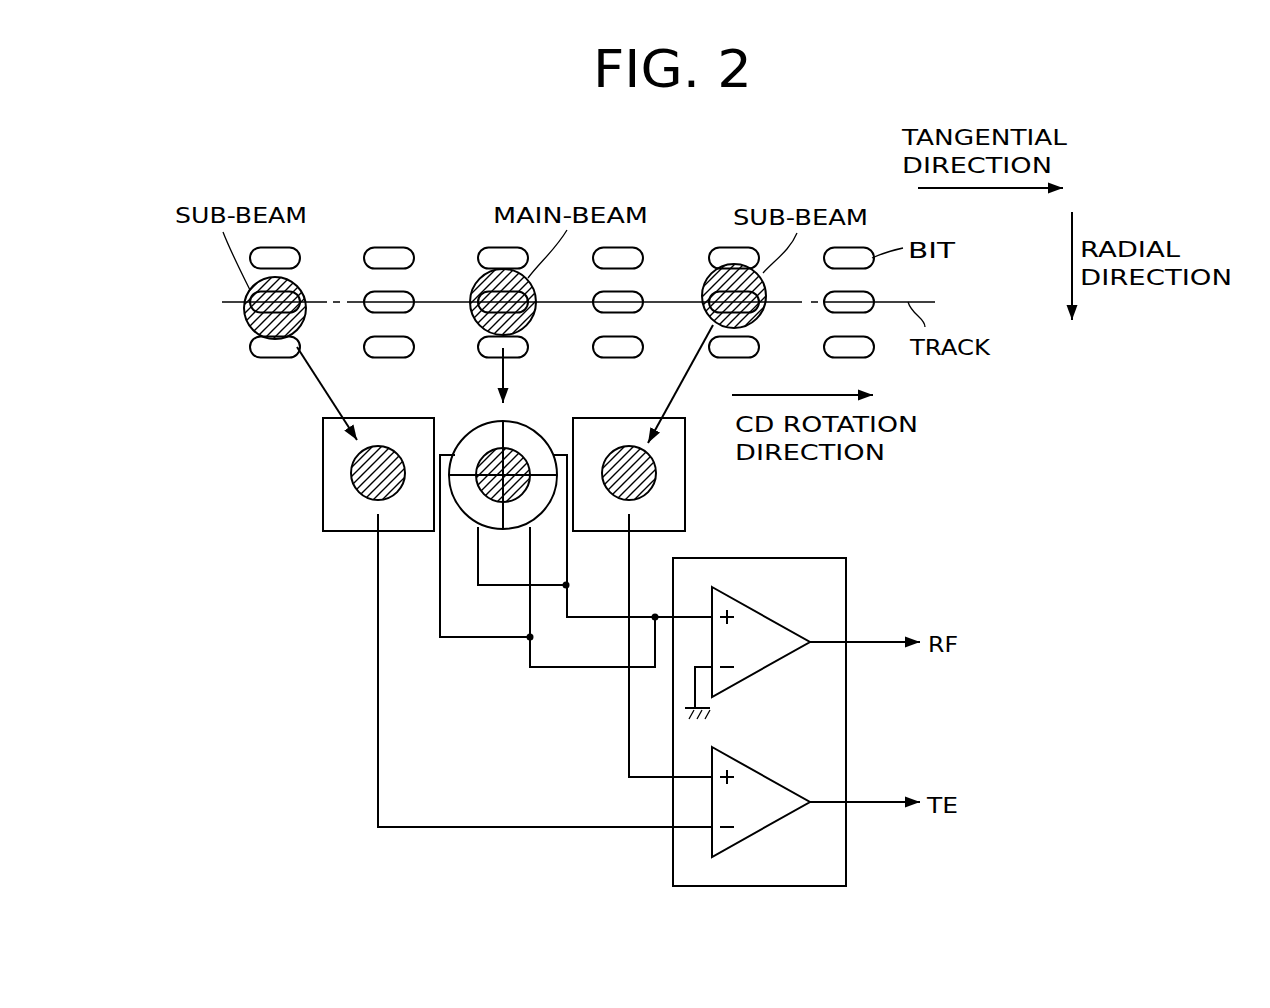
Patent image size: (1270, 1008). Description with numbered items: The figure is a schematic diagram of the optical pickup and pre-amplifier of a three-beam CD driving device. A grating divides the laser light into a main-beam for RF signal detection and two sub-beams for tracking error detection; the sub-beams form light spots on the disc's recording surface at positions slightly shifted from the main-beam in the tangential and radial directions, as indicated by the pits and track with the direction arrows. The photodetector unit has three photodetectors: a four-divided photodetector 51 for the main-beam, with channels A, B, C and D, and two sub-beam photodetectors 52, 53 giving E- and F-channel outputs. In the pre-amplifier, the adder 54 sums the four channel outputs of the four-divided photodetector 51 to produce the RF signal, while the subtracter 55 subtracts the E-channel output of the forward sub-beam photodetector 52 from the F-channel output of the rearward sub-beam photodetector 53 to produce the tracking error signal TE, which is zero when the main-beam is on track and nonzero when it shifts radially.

The four-divided photodetector 51 is at (527, 420).
The photodetector for the forward sub-beam 52 is at (323, 458).
The photodetector for the rearward sub-beam 53 is at (685, 505).
The adder 54 is at (770, 615).
The subtracter 55 is at (770, 776).